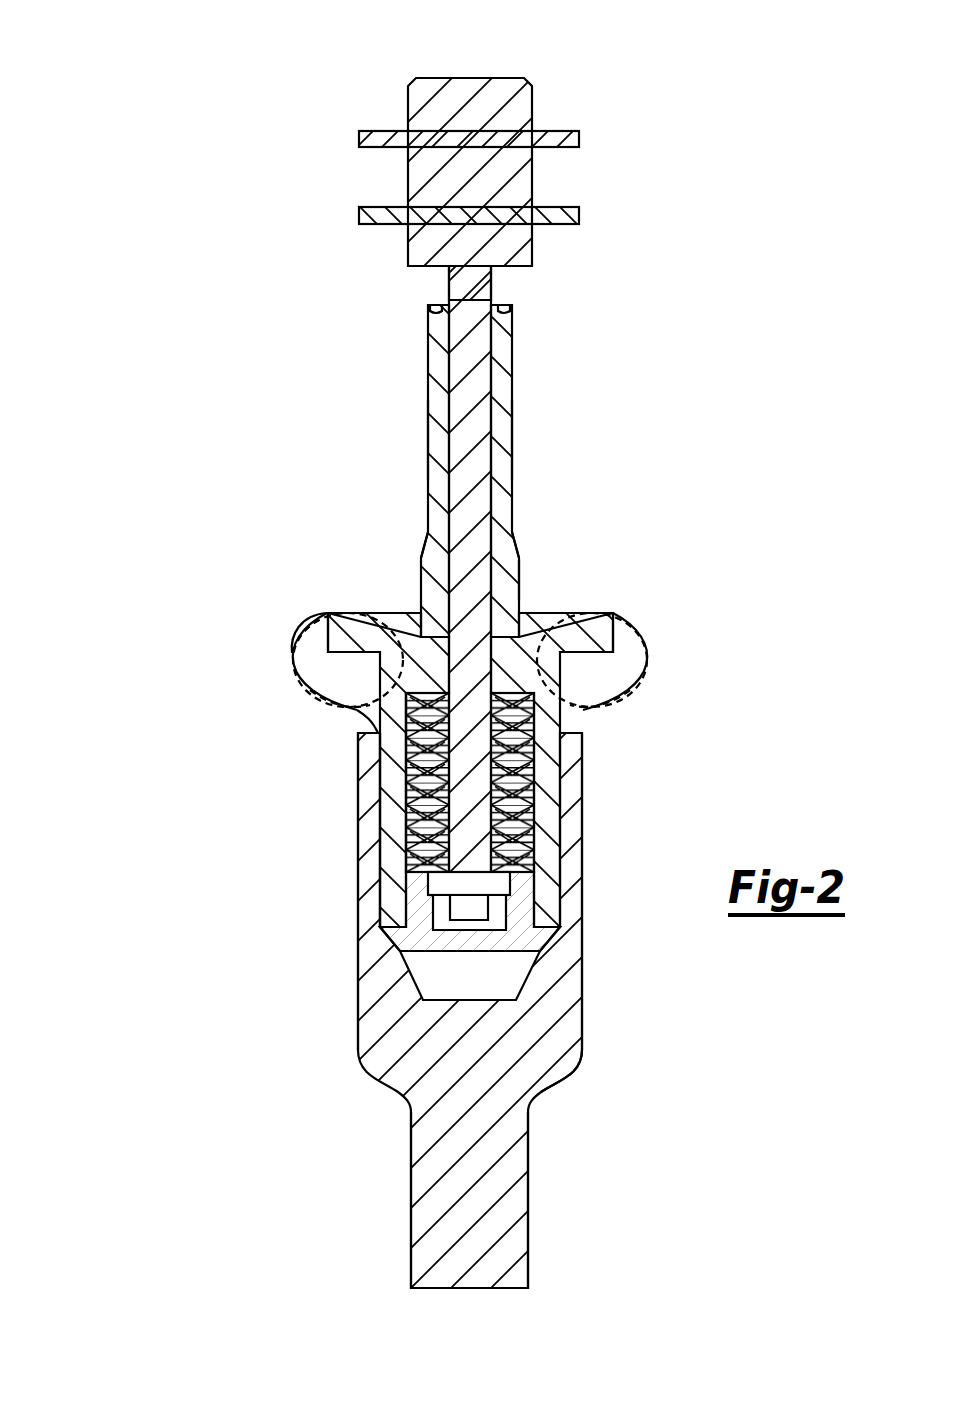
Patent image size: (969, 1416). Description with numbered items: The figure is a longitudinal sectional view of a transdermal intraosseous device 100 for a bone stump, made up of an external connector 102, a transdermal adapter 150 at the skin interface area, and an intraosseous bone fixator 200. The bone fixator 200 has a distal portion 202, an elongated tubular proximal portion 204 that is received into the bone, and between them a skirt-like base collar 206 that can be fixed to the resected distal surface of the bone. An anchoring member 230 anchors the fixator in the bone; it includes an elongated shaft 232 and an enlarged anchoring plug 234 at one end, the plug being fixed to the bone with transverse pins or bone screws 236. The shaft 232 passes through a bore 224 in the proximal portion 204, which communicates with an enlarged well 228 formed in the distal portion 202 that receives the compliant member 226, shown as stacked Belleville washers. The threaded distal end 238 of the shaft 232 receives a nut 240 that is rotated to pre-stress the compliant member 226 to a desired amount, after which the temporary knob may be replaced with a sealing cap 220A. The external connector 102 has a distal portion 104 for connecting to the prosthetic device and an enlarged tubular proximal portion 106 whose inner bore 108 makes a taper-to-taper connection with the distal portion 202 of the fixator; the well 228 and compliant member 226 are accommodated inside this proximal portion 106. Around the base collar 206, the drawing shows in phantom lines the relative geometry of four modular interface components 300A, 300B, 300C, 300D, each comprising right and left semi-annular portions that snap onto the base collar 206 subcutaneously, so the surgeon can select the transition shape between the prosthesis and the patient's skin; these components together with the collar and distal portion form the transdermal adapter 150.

The transdermal intraosseous device 100 is at (570, 1098).
The external connector 102 is at (378, 1032).
The distal portion of the external connector 104 is at (505, 1205).
The enlarged tubular proximal portion 106 is at (572, 838).
The inner bore 108 is at (380, 848).
The transdermal adapter 150 is at (551, 548).
The bone fixator 200 is at (540, 421).
The distal portion of the bone fixator 202 is at (550, 770).
The proximal portion of the bone fixator 204 is at (508, 358).
The base collar 206 is at (607, 632).
The cap 220A is at (540, 940).
The bore of the proximal portion 224 is at (487, 521).
The compliant member 226 is at (533, 808).
The well 228 is at (407, 792).
The anchoring member 230 is at (480, 319).
The elongated shaft 232 is at (467, 396).
The anchoring plug 234 is at (475, 88).
The bone screws 236 is at (573, 140).
The threaded distal end 238 is at (455, 915).
The nut 240 is at (495, 883).
The modular interface component 300A is at (357, 670).
The modular interface component 300B is at (290, 648).
The modular interface component 300C is at (360, 700).
The modular interface component 300D is at (327, 624).